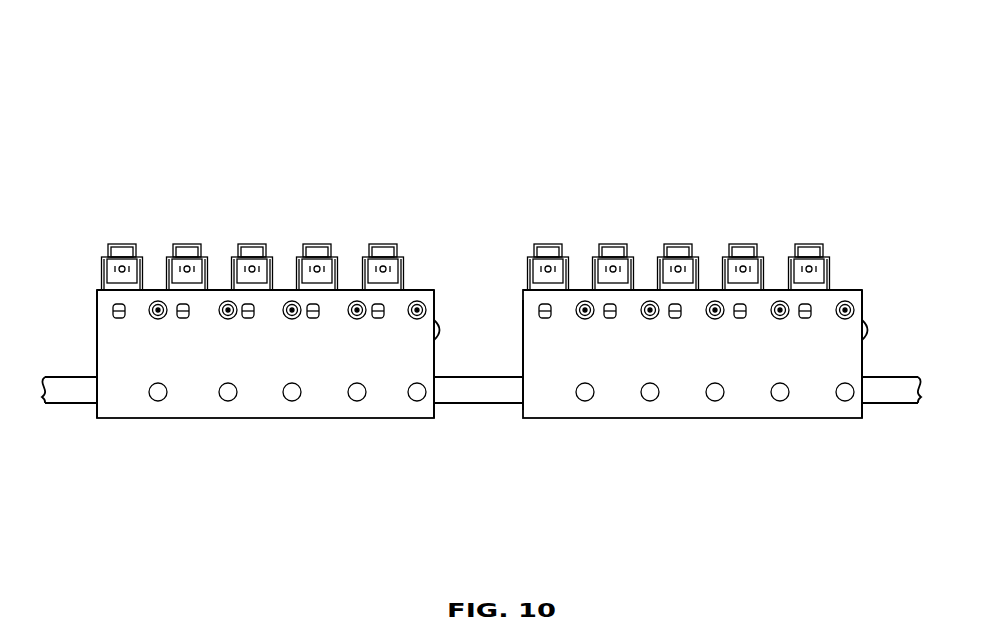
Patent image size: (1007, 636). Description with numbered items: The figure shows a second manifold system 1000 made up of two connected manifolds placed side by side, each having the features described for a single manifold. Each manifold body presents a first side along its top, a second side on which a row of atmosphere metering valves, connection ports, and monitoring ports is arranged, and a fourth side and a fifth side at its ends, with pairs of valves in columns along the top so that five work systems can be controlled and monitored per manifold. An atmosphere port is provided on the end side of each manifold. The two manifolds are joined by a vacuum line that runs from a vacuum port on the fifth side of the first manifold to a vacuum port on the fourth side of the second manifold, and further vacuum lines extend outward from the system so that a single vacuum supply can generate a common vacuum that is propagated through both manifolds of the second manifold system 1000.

The second manifold system 1000 is at (463, 60).